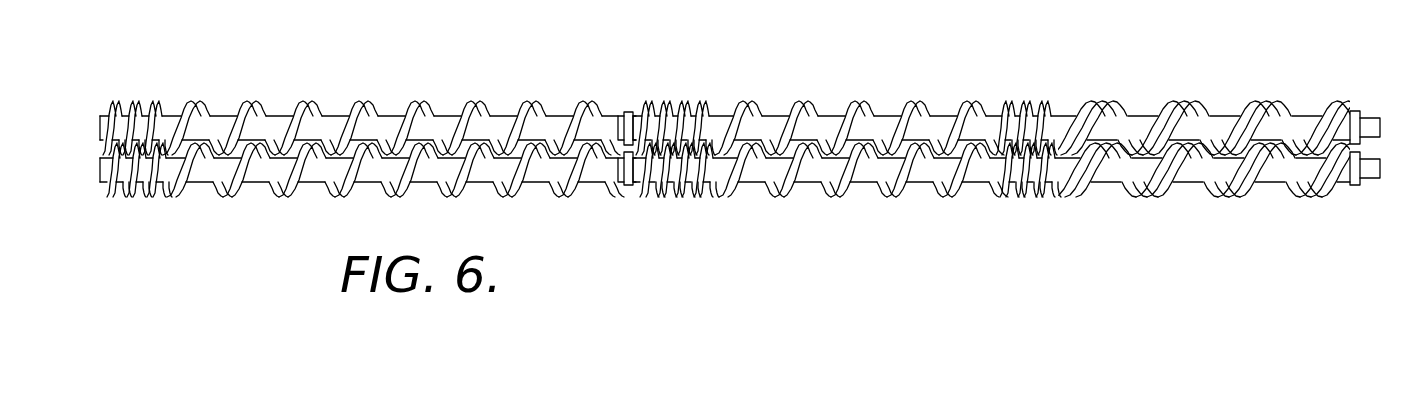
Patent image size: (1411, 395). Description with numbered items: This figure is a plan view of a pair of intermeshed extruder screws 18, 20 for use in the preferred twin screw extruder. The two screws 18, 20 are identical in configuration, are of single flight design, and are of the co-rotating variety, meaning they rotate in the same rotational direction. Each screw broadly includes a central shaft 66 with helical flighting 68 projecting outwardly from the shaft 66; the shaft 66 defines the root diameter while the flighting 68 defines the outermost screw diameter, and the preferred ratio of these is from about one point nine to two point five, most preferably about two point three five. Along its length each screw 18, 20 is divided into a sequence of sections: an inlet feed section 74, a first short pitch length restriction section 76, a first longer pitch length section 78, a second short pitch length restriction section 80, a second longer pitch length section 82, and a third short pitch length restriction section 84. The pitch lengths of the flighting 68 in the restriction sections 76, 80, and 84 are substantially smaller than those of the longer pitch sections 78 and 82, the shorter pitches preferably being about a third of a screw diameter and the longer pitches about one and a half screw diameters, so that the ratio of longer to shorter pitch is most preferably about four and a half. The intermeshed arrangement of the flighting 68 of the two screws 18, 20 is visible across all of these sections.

The extruder screw 18 is at (805, 205).
The extruder screw 20 is at (893, 90).
The central shaft 66 is at (590, 152).
The helical flighting 68 is at (1108, 107).
The inlet feed section 74 is at (1213, 118).
The first short pitch length restriction section 76 is at (1038, 102).
The first longer pitch length section 78 is at (800, 110).
The second short pitch length restriction section 80 is at (667, 102).
The second longer pitch length section 82 is at (338, 122).
The third short pitch length restriction section 84 is at (135, 102).